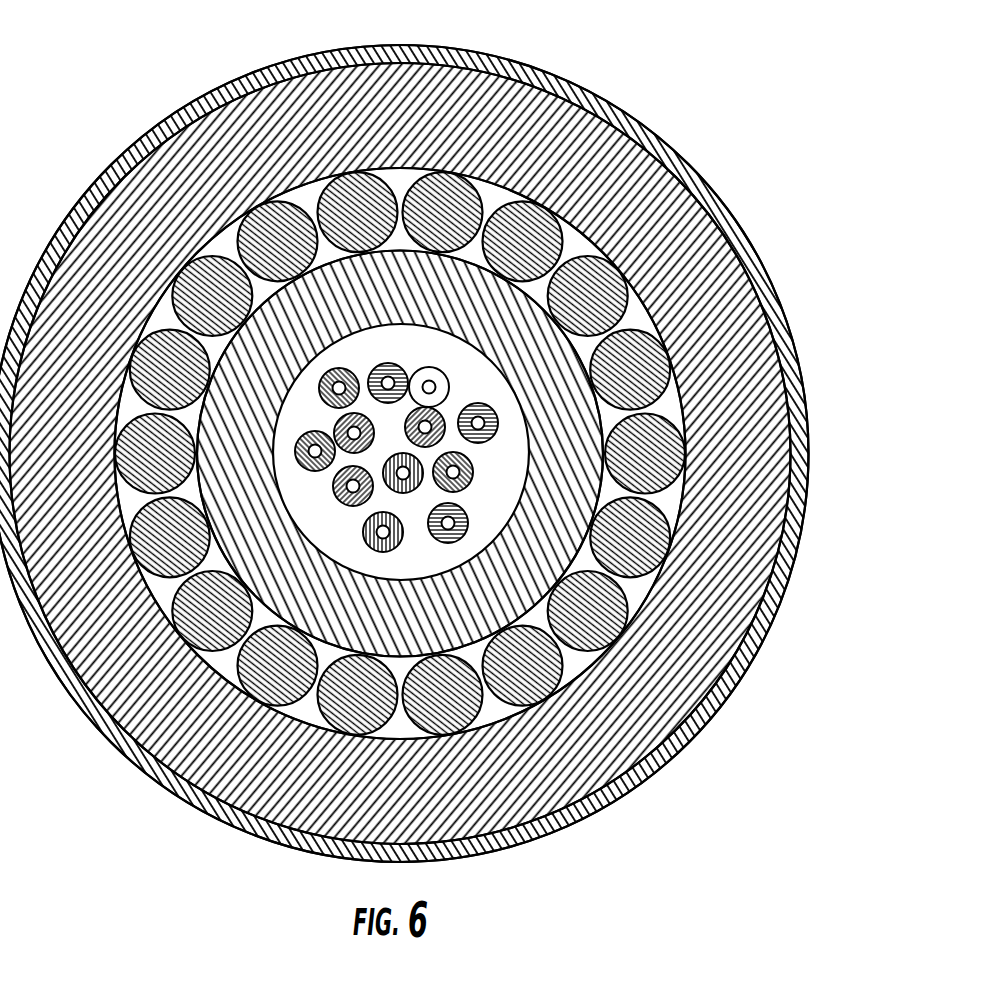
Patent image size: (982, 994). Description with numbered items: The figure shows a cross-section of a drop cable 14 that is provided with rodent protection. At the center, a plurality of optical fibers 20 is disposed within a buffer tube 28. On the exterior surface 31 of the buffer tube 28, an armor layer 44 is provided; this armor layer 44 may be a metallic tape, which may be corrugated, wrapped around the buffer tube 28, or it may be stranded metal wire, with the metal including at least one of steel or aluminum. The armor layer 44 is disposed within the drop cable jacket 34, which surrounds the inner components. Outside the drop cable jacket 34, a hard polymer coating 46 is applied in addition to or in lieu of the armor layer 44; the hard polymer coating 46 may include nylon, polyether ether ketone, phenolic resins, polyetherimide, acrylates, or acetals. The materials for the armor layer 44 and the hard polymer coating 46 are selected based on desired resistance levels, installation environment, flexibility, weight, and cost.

The drop cable 14 is at (84, 96).
The optical fibers 20 is at (393, 370).
The buffer tube 28 is at (567, 397).
The exterior surface 31 is at (242, 665).
The drop cable jacket 34 is at (732, 592).
The armor layer 44 is at (652, 522).
The hard polymer coating 46 is at (693, 732).